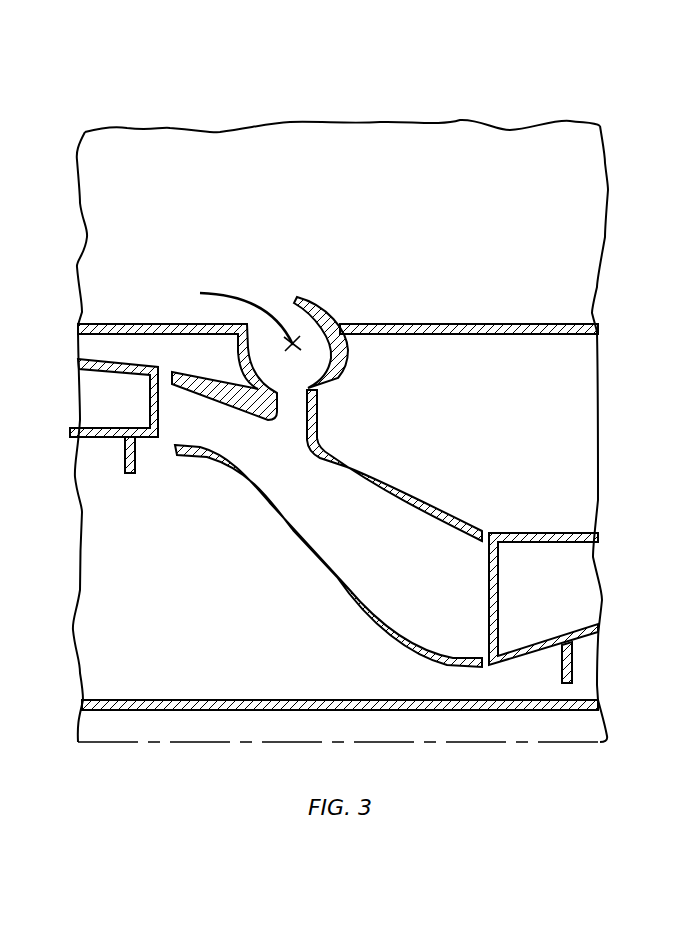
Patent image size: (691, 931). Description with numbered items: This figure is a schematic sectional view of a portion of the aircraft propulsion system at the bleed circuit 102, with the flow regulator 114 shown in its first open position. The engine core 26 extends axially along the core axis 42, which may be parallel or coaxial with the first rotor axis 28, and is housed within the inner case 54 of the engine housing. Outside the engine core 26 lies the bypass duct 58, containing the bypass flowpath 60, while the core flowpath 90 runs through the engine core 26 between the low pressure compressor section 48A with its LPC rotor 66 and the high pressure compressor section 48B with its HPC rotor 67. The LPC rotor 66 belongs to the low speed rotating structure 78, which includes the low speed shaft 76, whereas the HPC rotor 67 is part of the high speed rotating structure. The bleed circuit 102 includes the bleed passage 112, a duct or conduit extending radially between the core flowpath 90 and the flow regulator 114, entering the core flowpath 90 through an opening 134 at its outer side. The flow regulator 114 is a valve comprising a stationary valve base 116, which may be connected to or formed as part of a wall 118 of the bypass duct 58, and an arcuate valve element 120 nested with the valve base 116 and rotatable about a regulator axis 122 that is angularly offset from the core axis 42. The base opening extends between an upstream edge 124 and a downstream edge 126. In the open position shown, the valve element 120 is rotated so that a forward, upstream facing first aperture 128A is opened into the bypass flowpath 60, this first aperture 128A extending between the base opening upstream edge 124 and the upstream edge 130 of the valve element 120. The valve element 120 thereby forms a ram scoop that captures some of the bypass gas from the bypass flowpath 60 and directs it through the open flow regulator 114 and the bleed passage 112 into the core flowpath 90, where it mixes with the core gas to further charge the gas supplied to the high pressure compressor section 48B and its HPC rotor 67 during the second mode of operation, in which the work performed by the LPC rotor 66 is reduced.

The bypass duct 58 is at (572, 156).
The engine core 26 is at (93, 619).
The bypass flowpath 60 is at (153, 191).
The core flowpath 90 is at (461, 630).
The inner case 54 is at (382, 346).
The wall of the bypass duct 118 is at (382, 346).
The valve base 116 is at (347, 366).
The upstream edge of the base opening 124 is at (179, 361).
The opening 134 is at (280, 428).
The valve element 120 is at (365, 317).
The downstream edge of the base opening 126 is at (336, 332).
The bleed passage 112 is at (394, 460).
The regulator axis 122 is at (331, 380).
The low speed shaft 76 is at (340, 577).
The low speed rotating structure 78 is at (263, 700).
The LPC rotor 66 is at (114, 383).
The low pressure compressor section 48A is at (112, 338).
The HPC rotor 67 is at (581, 476).
The high pressure compressor section 48B is at (551, 355).
The first rotor axis 28 is at (341, 769).
The core axis 42 is at (477, 742).
The first aperture 128A is at (265, 301).
The upstream edge of the valve element 130 is at (402, 548).
The flow regulator 114 is at (323, 281).
The bleed circuit 102 is at (347, 279).